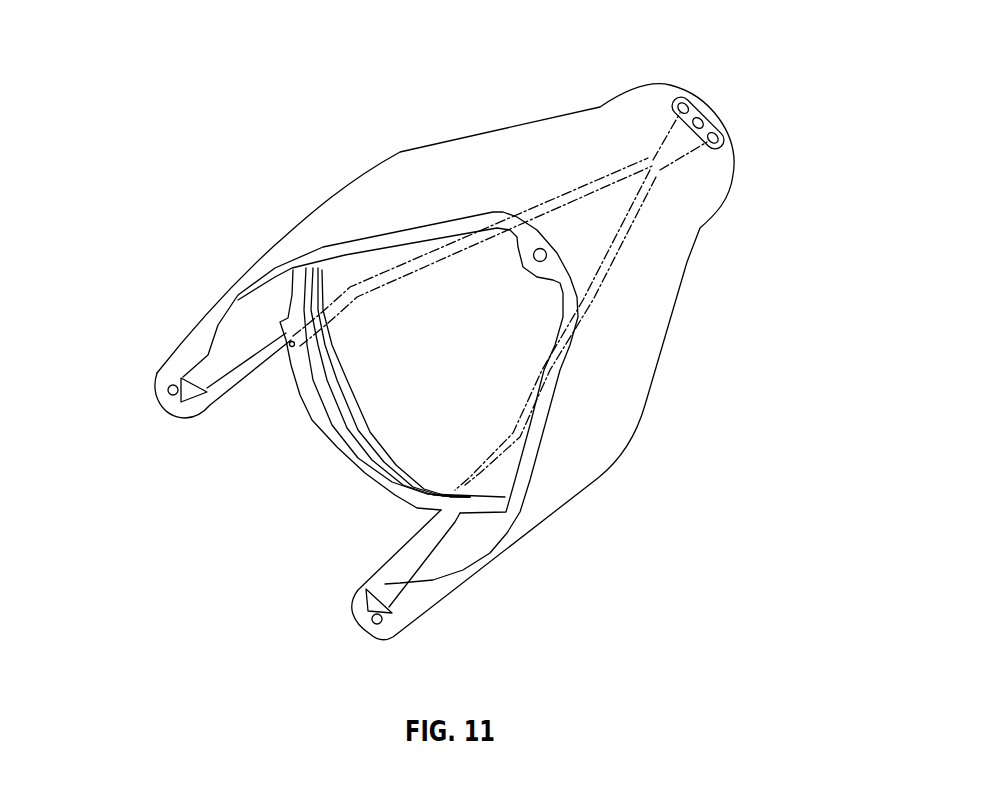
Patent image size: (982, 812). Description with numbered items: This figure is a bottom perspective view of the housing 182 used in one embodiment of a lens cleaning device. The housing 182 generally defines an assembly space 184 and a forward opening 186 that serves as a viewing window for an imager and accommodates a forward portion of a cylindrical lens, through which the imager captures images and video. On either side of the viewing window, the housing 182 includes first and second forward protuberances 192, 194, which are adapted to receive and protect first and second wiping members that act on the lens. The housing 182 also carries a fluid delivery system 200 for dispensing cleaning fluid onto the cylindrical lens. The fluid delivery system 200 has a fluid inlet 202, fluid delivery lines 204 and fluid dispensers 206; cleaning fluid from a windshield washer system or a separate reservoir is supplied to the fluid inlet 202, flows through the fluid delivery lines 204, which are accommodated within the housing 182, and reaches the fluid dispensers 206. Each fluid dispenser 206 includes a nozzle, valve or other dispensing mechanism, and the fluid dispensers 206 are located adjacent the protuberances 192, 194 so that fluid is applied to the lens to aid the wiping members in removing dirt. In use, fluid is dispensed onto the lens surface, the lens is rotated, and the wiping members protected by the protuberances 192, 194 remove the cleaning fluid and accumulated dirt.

The housing 182 is at (250, 202).
The assembly space 184 is at (441, 327).
The forward opening 186 is at (257, 471).
The first forward protuberance 192 is at (364, 630).
The second forward protuberance 194 is at (160, 378).
The fluid delivery system 200 is at (592, 185).
The fluid inlet 202 is at (708, 113).
The fluid delivery lines 204 is at (543, 207).
The fluid dispensers 206 is at (287, 343).